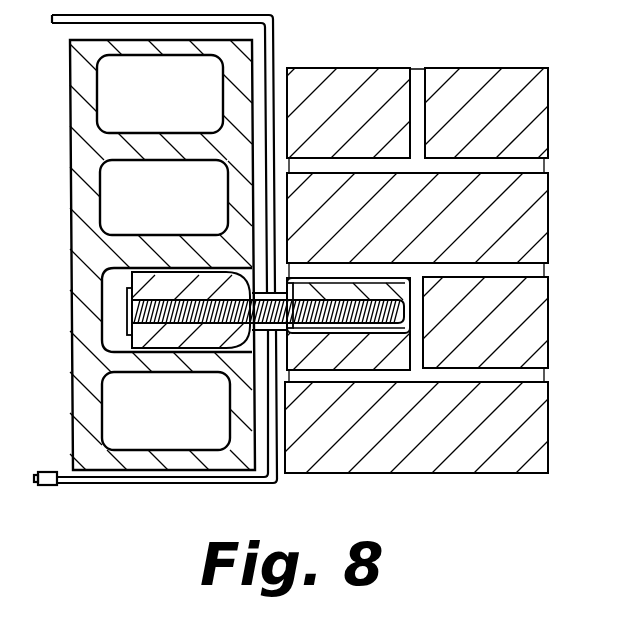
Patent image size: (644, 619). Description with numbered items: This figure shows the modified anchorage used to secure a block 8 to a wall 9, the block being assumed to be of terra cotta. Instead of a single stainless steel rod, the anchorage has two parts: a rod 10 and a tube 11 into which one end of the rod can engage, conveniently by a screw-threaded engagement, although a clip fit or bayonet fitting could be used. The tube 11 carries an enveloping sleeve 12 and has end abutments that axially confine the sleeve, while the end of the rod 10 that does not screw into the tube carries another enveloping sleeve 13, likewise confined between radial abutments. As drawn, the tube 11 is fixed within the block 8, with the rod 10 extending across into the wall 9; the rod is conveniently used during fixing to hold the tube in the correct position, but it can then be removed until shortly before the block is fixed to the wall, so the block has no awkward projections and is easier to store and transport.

The block 8 is at (72, 205).
The wall 9 is at (455, 450).
The rod 10 is at (368, 297).
The tube 11 is at (165, 298).
The enveloping sleeve 12 is at (128, 340).
The enveloping sleeve 13 is at (337, 285).